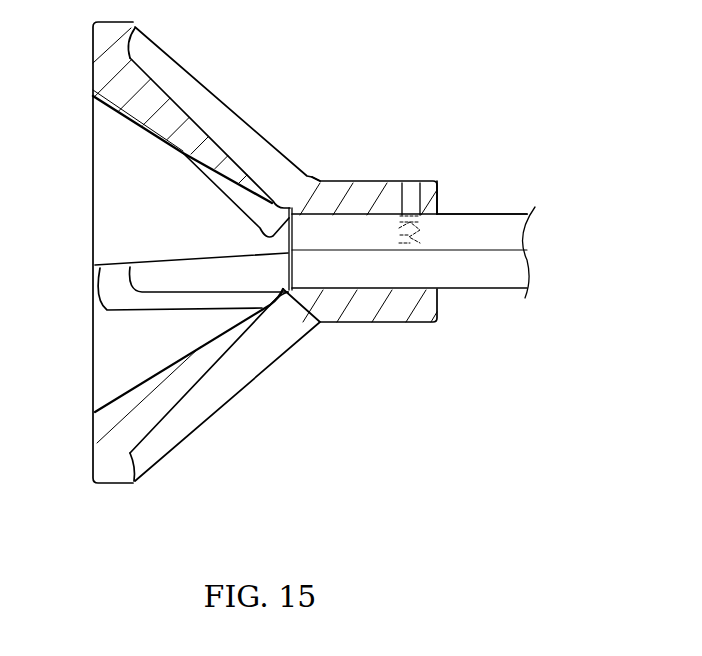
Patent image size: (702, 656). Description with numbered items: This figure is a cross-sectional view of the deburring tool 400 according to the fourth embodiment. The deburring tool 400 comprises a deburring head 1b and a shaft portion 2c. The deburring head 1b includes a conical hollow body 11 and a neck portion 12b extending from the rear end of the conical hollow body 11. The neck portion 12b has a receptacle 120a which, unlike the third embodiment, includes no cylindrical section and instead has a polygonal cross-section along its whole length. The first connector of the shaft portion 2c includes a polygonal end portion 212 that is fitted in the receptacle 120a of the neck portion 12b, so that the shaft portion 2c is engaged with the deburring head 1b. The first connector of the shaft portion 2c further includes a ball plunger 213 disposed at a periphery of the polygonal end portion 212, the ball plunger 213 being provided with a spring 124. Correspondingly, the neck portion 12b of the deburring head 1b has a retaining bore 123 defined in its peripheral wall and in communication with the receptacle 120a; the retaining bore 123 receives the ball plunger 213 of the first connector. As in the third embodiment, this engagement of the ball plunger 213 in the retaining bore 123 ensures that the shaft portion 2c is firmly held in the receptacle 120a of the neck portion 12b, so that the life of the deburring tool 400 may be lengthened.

The deburring tool 400 is at (522, 31).
The deburring head 1b is at (258, 117).
The conical hollow body 11 is at (220, 408).
The neck portion 12b is at (375, 323).
The polygonal end portion 212 is at (337, 273).
The ball plunger 213 is at (433, 200).
The retaining bore 123 is at (420, 213).
The receptacle 120a is at (397, 288).
The shaft portion 2c is at (493, 220).
The spring 124 is at (418, 238).